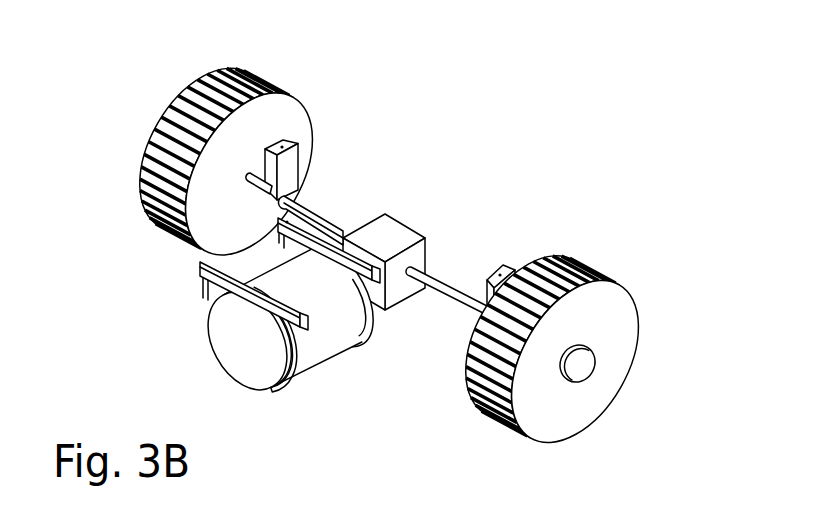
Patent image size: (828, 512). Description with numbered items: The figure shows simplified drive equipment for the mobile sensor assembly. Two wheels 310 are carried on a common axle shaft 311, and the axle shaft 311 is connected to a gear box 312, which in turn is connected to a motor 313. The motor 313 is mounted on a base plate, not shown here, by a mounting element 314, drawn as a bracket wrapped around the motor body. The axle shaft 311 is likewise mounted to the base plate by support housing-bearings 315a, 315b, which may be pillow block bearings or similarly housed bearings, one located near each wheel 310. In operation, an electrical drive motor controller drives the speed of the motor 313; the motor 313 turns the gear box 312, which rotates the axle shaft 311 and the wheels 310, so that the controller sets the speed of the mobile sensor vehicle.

The wheels 310 is at (315, 112).
The axle shaft 311 is at (330, 210).
The gear box 312 is at (413, 227).
The motor 313 is at (330, 360).
The mounting element 314 is at (207, 293).
The support housing-bearing 315a is at (300, 162).
The support housing-bearing 315b is at (518, 262).